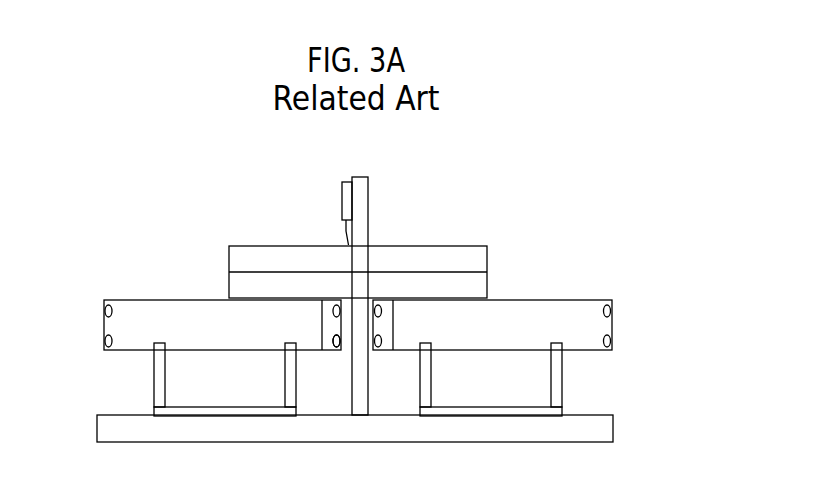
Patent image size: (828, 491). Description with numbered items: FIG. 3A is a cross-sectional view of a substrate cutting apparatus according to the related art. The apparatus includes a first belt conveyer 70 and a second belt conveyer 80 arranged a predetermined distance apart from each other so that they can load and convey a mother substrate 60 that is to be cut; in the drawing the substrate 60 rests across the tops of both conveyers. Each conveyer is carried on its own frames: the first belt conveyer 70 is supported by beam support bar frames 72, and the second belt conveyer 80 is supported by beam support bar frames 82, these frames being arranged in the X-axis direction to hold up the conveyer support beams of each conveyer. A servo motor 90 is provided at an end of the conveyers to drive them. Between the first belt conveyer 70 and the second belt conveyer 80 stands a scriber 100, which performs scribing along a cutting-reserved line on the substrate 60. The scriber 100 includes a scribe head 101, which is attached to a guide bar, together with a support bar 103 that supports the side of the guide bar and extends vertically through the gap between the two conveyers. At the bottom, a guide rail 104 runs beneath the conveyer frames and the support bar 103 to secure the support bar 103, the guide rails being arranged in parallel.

The scriber 100 is at (331, 184).
The scribe head 101 is at (343, 212).
The support bar 103 is at (362, 399).
The mother substrate 60 is at (487, 260).
The first belt conveyer 70 is at (158, 308).
The second belt conveyer 80 is at (603, 325).
The beam support bar frame 72 is at (158, 383).
The beam support bar frame 82 is at (558, 388).
The servo motor 90 is at (336, 346).
The guide rail 104 is at (608, 427).